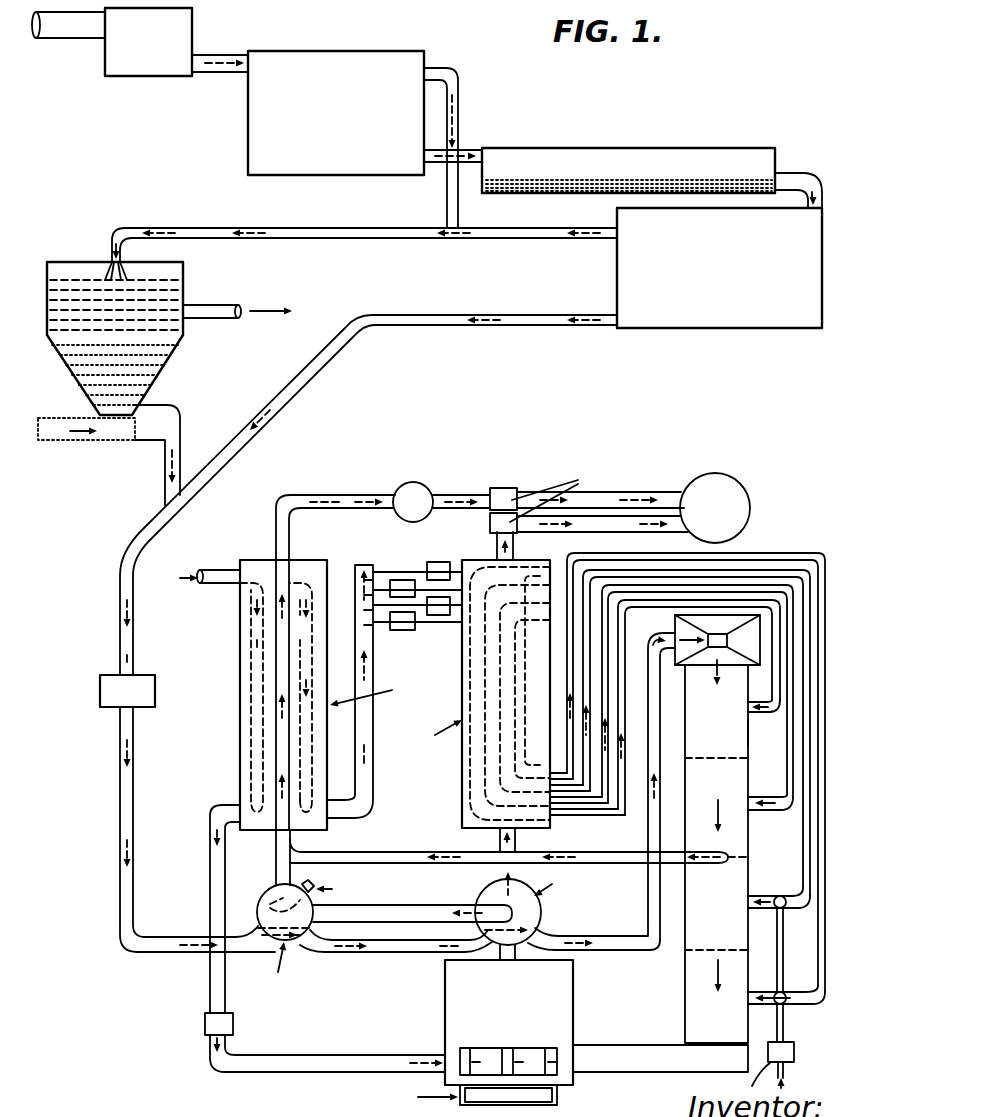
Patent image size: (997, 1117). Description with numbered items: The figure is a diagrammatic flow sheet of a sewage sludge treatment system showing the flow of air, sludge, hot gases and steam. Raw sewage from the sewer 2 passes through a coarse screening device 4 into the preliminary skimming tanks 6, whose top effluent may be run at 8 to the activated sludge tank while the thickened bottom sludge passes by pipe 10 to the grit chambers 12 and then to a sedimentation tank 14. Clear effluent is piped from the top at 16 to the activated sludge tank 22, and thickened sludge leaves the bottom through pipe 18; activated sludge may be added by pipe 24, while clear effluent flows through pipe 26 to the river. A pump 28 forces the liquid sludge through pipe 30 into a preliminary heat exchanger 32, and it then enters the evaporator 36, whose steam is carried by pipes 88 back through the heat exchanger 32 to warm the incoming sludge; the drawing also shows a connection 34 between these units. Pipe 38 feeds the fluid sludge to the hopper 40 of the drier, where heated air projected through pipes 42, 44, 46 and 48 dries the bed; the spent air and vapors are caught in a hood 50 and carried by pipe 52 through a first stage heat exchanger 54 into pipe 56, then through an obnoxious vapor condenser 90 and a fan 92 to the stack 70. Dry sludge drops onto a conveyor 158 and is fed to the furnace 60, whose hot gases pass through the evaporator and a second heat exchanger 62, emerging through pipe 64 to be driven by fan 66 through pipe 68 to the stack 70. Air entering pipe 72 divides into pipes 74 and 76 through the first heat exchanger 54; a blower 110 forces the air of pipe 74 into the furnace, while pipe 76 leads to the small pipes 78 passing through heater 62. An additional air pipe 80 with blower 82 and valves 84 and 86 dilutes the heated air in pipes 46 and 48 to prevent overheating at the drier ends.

The sewer 2 is at (63, 36).
The screening device 4 is at (192, 28).
The preliminary skimming tanks 6 is at (289, 62).
The top flow effluent conduit 8 is at (440, 72).
The pipe 10 is at (465, 150).
The grit chambers 12 is at (532, 148).
The sedimentation tank 14 is at (706, 328).
The clear effluent pipe 16 is at (510, 243).
The pipe 18 is at (533, 315).
The activated sludge tank 22 is at (183, 332).
The pipe 24 is at (183, 412).
The pipe 26 is at (207, 312).
The pump 28 is at (107, 707).
The pipe 30 is at (130, 952).
The preliminary heat exchanger 32 is at (262, 898).
The pipe to evaporator 34 is at (357, 954).
The evaporator 36 is at (541, 909).
The pipe 38 is at (648, 818).
The hopper 40 is at (672, 626).
The pipe 42 is at (750, 692).
The pipe 44 is at (793, 733).
The pipe 46 is at (808, 780).
The pipe 48 is at (822, 925).
The hood 50 is at (750, 838).
The pipe 52 is at (430, 842).
The first stage heat exchanger 54 is at (240, 727).
The pipe 56 is at (276, 532).
The furnace 60 is at (573, 1018).
The second heat exchanger 62 is at (462, 778).
The pipe 64 is at (496, 540).
The fan 66 is at (490, 517).
The pipe 68 is at (567, 532).
The stack 70 is at (750, 489).
The pipe 72 is at (220, 583).
The pipe 74 is at (210, 858).
The pipe 76 is at (375, 718).
The pipes 78 is at (378, 582).
The air pipe 80 is at (795, 1063).
The blower 82 is at (796, 1042).
The air valve 84 is at (776, 1003).
The air valve 86 is at (780, 896).
The pipes 88 is at (276, 870).
The obnoxious vapor condenser 90 is at (415, 484).
The fan 92 is at (490, 486).
The blower 110 is at (200, 1024).
The conveyor 158 is at (660, 1073).